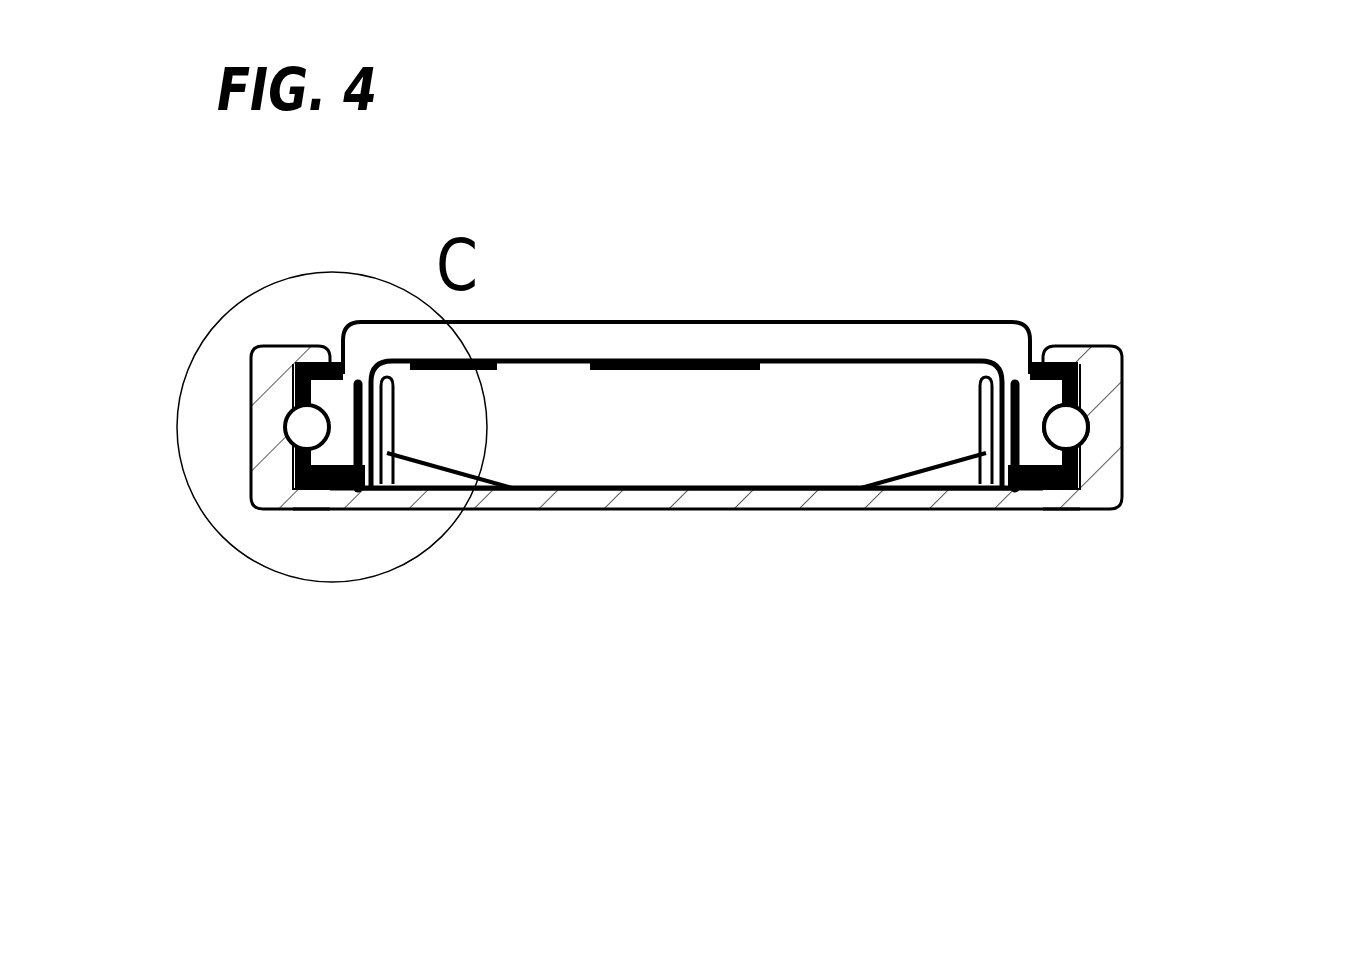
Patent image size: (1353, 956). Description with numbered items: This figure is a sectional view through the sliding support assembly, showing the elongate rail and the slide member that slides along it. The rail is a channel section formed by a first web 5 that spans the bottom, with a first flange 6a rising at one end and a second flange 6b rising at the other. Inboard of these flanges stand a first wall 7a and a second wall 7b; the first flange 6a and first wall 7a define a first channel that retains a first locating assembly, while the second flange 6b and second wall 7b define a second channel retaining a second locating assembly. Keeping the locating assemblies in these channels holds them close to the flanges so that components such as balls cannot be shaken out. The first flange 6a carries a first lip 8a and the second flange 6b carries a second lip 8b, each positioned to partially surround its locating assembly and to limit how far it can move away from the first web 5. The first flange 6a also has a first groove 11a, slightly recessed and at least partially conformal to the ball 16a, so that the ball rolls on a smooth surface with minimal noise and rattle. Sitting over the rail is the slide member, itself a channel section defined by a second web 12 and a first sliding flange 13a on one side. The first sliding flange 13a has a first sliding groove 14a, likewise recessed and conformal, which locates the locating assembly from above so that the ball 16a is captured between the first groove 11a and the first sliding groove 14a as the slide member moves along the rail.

The first web 5 is at (709, 502).
The first flange 6a is at (1100, 375).
The second flange 6b is at (273, 388).
The first wall 7a is at (977, 460).
The second wall 7b is at (390, 457).
The first lip 8a is at (1054, 345).
The second lip 8b is at (270, 373).
The first groove 11a is at (1072, 425).
The second web 12 is at (699, 323).
The first sliding flange 13a is at (1020, 388).
The first sliding groove 14a is at (1041, 458).
The ball 16a is at (1068, 427).